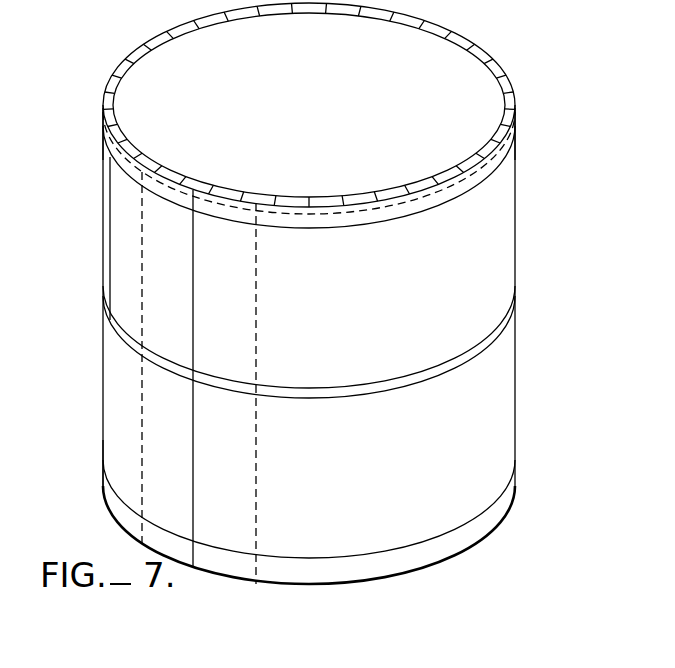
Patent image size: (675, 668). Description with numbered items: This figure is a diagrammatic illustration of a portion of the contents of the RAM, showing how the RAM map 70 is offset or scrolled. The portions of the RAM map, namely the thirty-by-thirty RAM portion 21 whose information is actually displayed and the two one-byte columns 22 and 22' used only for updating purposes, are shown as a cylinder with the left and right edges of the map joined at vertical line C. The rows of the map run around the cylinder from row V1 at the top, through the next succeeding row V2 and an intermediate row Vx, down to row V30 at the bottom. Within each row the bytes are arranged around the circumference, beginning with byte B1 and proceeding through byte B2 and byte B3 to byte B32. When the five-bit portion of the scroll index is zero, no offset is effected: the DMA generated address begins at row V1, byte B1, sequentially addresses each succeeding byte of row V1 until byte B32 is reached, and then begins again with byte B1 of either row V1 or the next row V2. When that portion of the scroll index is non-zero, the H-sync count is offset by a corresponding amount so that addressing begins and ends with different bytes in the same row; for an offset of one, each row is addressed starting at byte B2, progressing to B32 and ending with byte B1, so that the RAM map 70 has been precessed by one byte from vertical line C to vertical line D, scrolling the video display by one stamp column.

The RAM map 70 is at (556, 181).
The 30×30 RAM portion 21 is at (492, 421).
The one-byte column 22 is at (285, 272).
The one-byte column 22' is at (105, 357).
The row V1 is at (103, 119).
The row V2 is at (516, 127).
The row Vx is at (516, 298).
The row V30 is at (117, 500).
The vertical line C is at (193, 183).
The vertical line D is at (256, 196).
The byte B1 is at (222, 205).
The byte B2 is at (282, 214).
The byte B3 is at (336, 214).
The byte B32 is at (172, 188).